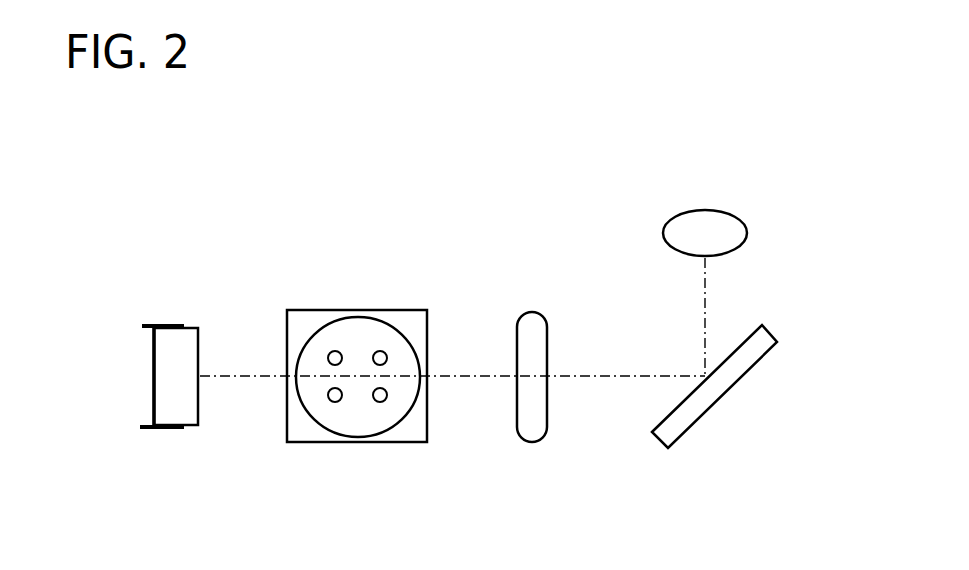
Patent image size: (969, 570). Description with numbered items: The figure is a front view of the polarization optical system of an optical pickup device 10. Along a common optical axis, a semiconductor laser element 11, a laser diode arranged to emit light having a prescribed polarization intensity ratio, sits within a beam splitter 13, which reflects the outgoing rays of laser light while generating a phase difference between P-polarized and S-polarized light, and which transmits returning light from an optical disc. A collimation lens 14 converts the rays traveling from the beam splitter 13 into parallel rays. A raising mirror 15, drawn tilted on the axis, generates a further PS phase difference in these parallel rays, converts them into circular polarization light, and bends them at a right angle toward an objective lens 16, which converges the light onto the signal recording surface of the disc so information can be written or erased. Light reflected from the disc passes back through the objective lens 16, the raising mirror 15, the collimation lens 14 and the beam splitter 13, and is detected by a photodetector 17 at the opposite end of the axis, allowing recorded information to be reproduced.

The optical pickup device 10 is at (120, 198).
The semiconductor laser element 11 is at (305, 413).
The beam splitter 13 is at (325, 310).
The collimation lens 14 is at (532, 312).
The raising mirror 15 is at (702, 418).
The objective lens 16 is at (740, 218).
The photodetector 17 is at (165, 430).